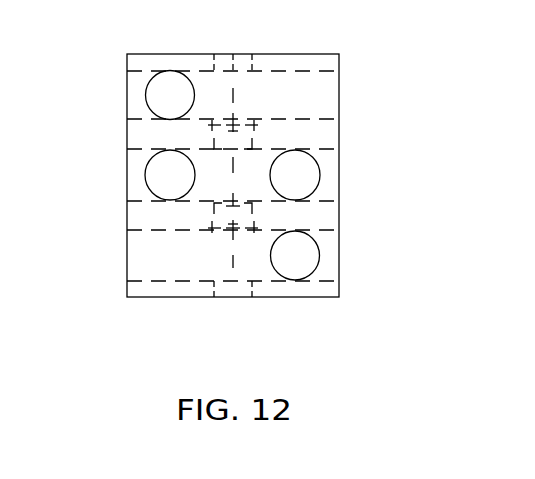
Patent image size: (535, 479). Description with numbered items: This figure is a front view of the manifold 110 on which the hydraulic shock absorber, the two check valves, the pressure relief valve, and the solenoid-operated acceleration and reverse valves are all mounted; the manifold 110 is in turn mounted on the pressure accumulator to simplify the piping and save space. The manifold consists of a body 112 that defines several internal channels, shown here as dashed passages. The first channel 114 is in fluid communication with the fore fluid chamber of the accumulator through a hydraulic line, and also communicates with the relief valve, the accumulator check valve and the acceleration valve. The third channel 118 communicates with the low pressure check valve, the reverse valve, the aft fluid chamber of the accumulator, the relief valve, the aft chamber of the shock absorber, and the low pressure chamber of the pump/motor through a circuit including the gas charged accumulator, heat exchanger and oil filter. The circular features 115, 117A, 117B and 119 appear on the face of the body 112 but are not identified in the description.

The manifold 110 is at (98, 110).
The body 112 is at (152, 218).
The first channel 114 is at (290, 90).
The port 115 is at (168, 97).
The port 117A is at (168, 178).
The port 117B is at (300, 172).
The third channel 118 is at (233, 268).
The port 119 is at (295, 257).